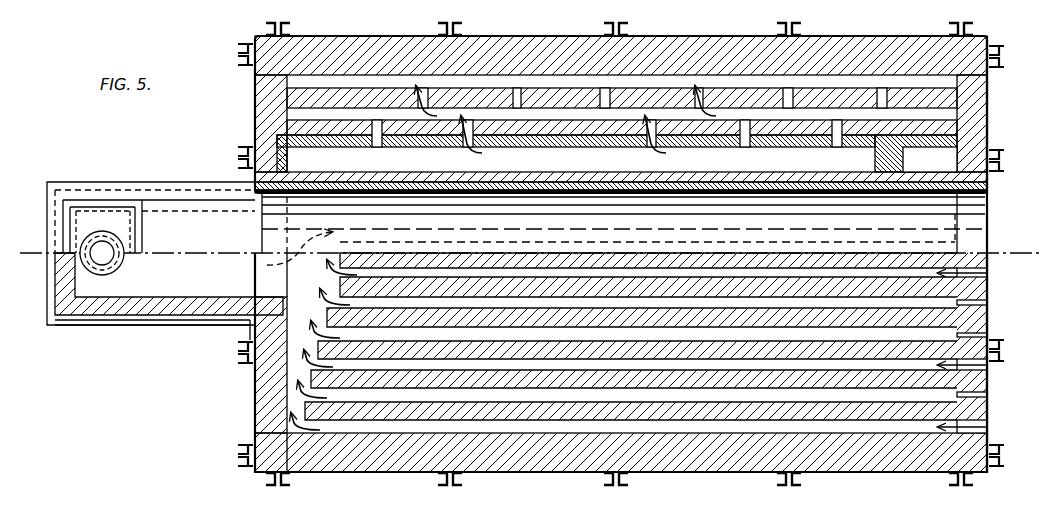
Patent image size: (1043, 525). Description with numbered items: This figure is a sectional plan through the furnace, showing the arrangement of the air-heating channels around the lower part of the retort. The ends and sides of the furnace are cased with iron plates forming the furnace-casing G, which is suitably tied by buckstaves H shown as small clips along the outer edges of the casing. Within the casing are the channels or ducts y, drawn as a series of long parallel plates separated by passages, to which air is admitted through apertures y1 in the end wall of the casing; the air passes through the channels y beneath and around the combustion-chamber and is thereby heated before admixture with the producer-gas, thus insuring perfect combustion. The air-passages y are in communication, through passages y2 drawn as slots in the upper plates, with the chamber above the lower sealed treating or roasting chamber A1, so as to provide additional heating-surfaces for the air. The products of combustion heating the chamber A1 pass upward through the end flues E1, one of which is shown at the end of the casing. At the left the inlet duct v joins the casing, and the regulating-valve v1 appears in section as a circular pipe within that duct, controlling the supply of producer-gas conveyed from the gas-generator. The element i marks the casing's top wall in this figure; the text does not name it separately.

The buckstaves H is at (236, 53).
The casing top wall i is at (372, 37).
The air channels or ducts y is at (624, 251).
The air apertures y1 is at (986, 80).
The air passages y2 is at (519, 90).
The end flues E1 is at (916, 153).
The lower sealed treating or roasting chamber A1 is at (623, 229).
The inlet duct v is at (531, 261).
The regulating-valve v1 is at (114, 270).
The furnace-casing G is at (254, 382).